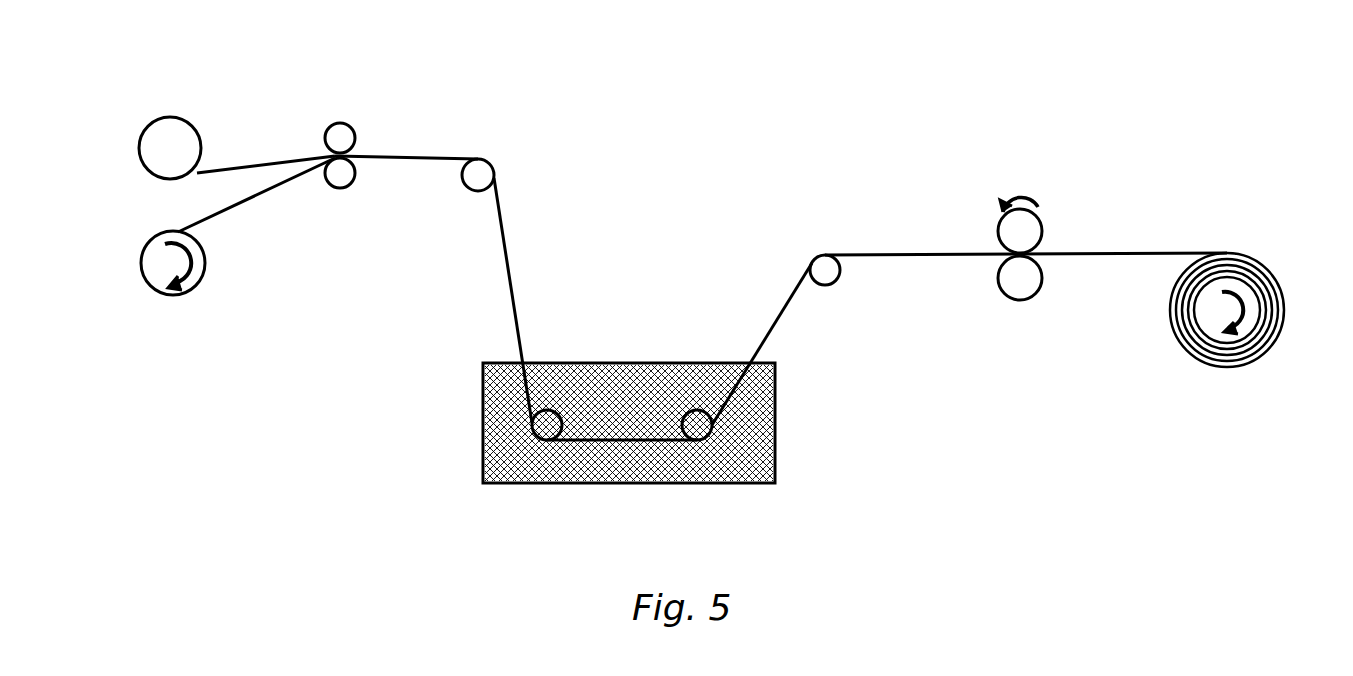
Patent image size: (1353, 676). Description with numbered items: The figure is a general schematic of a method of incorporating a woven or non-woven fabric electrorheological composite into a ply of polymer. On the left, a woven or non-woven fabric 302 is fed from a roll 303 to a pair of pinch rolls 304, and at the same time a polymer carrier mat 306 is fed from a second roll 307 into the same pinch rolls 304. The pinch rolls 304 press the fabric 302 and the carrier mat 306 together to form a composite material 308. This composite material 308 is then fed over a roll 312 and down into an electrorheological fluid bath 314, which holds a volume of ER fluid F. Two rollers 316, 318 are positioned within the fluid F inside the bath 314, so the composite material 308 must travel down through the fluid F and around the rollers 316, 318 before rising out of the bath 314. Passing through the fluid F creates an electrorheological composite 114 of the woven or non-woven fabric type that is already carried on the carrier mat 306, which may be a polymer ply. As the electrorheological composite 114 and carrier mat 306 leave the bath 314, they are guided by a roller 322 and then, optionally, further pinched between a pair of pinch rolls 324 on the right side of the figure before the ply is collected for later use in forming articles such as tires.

The roll 303 is at (163, 145).
The woven or non-woven fabric 302 is at (235, 165).
The pinch rolls 304 is at (360, 132).
The polymer carrier mat 306 is at (245, 207).
The roll 307 is at (167, 267).
The composite material 308 is at (435, 158).
The roll 312 is at (485, 187).
The electrorheological fluid bath 314 is at (590, 362).
The electrorheological fluid F is at (673, 362).
The roller 316 is at (523, 485).
The roller 318 is at (662, 487).
The electrorheological composite 114 is at (795, 280).
The roller 322 is at (840, 275).
The pinch rolls 324 is at (1047, 228).